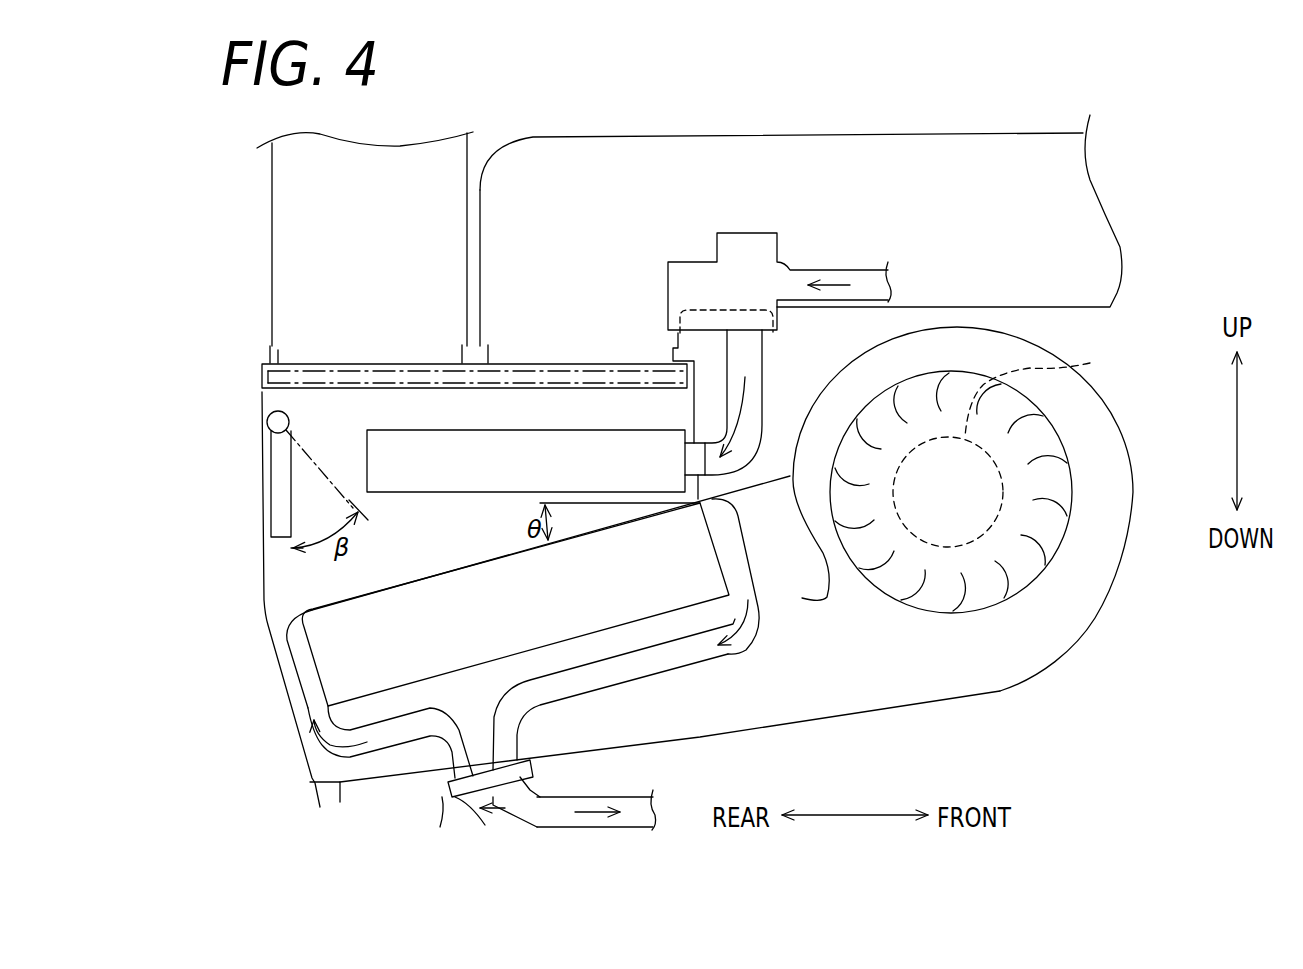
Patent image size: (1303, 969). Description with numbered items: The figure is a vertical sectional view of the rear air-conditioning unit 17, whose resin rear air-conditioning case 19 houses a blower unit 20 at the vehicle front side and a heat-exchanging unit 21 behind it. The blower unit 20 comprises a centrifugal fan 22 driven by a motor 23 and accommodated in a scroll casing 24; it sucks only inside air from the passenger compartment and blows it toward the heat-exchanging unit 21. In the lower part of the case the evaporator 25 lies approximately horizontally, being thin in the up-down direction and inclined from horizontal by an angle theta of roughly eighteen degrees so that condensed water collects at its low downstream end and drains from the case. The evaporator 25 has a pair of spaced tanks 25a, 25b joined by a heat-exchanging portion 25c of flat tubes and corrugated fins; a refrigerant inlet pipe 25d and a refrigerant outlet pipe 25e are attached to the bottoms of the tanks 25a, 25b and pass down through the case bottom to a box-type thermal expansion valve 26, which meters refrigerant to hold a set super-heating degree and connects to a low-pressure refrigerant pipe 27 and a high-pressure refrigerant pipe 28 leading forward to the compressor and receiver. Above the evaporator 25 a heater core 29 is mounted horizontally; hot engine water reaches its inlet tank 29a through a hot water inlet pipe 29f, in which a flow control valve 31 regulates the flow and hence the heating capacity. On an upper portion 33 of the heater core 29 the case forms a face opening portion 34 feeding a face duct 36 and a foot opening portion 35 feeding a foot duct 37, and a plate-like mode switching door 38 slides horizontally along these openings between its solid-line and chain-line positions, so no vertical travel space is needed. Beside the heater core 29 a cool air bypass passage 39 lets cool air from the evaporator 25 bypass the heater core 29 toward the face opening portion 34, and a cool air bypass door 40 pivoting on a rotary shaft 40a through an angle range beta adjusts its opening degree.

The rear air-conditioning unit 17 is at (935, 720).
The rear air-conditioning case 19 is at (757, 735).
The blower unit 20 is at (1133, 558).
The heat-exchanging unit 21 is at (250, 540).
The centrifugal fan 22 is at (1023, 424).
The motor 23 is at (1090, 363).
The scroll casing 24 is at (1134, 482).
The evaporator 25 is at (310, 608).
The tank 25a is at (300, 660).
The tank 25b is at (732, 545).
The heat-exchanging portion 25c is at (380, 613).
The refrigerant inlet pipe 25d is at (390, 742).
The refrigerant outlet pipe 25e is at (677, 660).
The thermal expansion valve 26 is at (450, 797).
The low-pressure refrigerant pipe 27 is at (627, 795).
The high-pressure refrigerant pipe 28 is at (482, 805).
The heater core 29 is at (388, 426).
The inlet tank 29a is at (613, 450).
The hot water inlet pipe 29f is at (747, 378).
The flow control valve 31 is at (757, 233).
The upper portion 33 is at (263, 363).
The face opening portion 34 is at (327, 350).
The foot opening portion 35 is at (582, 353).
The face duct 36 is at (272, 190).
The foot duct 37 is at (870, 133).
The mode switching door 38 is at (537, 373).
The cool air bypass passage 39 is at (327, 441).
The cool air bypass door 40 is at (275, 467).
The rotary shaft 40a is at (267, 420).